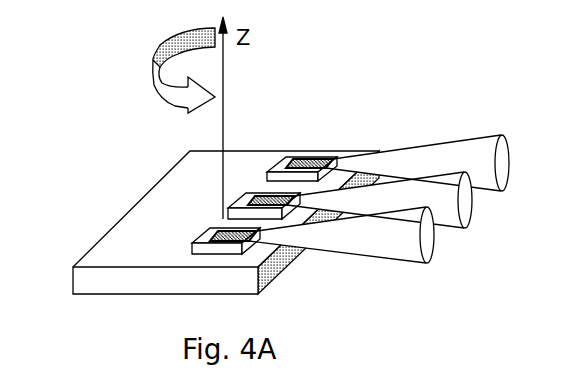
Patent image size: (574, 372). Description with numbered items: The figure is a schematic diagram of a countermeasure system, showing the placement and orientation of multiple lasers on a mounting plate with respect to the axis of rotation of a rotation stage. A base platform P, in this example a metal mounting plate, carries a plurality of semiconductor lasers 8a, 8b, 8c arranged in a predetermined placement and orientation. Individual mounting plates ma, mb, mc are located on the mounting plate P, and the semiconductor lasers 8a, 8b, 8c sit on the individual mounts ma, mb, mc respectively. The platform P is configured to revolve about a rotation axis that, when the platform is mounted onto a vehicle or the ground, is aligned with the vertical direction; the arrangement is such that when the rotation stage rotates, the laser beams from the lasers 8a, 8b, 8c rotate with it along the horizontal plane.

The base platform P is at (99, 190).
The semiconductor laser 8a is at (210, 235).
The semiconductor laser 8b is at (263, 195).
The semiconductor laser 8c is at (322, 157).
The individual mounting plate ma is at (212, 249).
The individual mounting plate mb is at (237, 204).
The individual mounting plate mc is at (305, 162).